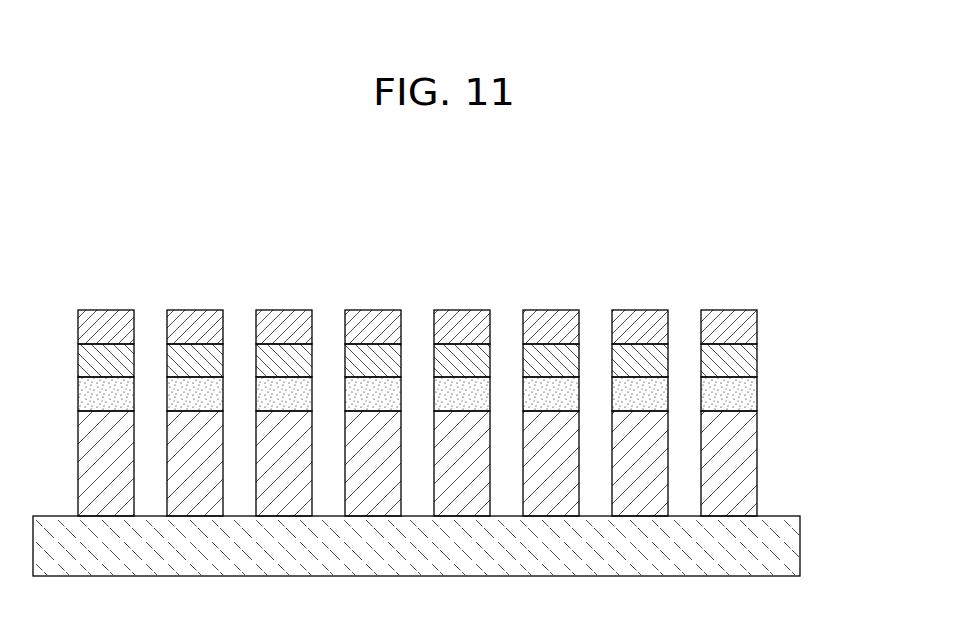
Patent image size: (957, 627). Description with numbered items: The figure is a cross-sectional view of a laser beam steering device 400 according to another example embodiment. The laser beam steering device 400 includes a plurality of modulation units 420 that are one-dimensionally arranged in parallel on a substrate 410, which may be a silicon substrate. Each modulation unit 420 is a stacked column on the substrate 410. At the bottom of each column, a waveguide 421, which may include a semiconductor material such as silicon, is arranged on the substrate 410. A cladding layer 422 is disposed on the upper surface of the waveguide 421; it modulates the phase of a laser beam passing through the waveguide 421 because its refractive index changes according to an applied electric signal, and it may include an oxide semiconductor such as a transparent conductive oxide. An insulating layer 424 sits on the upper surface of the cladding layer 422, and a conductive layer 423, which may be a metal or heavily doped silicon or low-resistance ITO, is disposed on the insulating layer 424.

The laser beam steering device 400 is at (790, 267).
The substrate 410 is at (800, 547).
The modulation unit 420 is at (460, 360).
The waveguide 421 is at (757, 463).
The cladding layer 422 is at (757, 392).
The conductive layer 423 is at (757, 325).
The insulating layer 424 is at (757, 360).